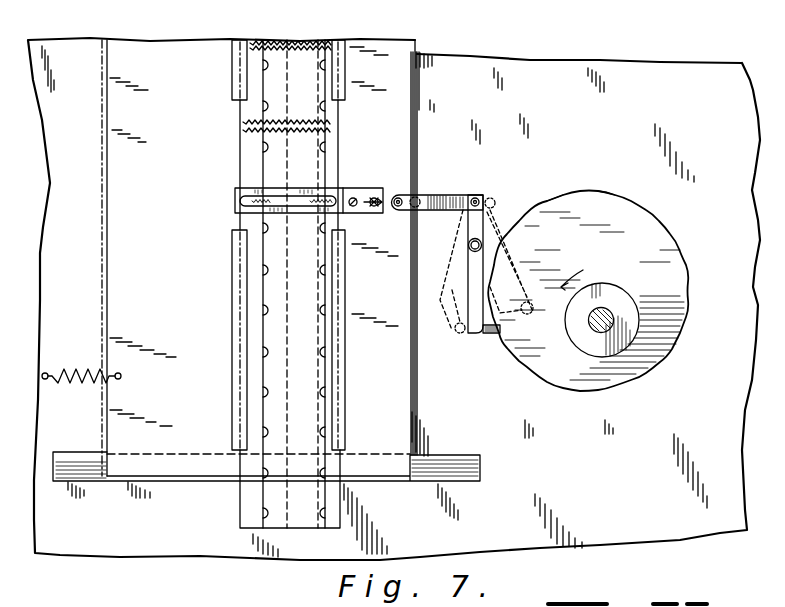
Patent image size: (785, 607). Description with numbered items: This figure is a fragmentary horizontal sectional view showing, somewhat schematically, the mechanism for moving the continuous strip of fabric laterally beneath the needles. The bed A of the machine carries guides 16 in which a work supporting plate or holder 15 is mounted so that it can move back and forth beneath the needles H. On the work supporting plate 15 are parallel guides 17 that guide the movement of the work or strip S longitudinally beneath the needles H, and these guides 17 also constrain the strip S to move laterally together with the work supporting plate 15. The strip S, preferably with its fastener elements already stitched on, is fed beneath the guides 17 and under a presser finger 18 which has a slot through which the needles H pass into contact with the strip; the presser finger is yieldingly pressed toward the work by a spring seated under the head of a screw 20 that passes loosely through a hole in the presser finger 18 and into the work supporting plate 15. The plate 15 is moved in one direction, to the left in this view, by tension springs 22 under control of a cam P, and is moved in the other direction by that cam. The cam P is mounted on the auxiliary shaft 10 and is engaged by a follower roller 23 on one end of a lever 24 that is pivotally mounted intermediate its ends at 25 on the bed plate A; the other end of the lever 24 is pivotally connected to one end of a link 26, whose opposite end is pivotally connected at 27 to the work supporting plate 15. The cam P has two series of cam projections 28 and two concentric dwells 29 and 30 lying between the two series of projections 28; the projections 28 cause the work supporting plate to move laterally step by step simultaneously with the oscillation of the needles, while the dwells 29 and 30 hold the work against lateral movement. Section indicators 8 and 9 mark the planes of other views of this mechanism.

The section line 8- 8 is at (66, 583).
The section line 9- 9 is at (385, 182).
The auxiliary shaft 10 is at (604, 310).
The work supporting plate 15 is at (168, 463).
The guides 16 is at (215, 485).
The parallel guides 17 is at (422, 404).
The presser finger 18 is at (333, 188).
The screw 20 is at (353, 207).
The tension springs 22 is at (77, 367).
The follower roller 23 is at (497, 337).
The lever 24 is at (484, 285).
The pivot 25 is at (481, 243).
The link 26 is at (439, 179).
The pivotal connection 27 is at (400, 198).
The cam projections 28 is at (593, 295).
The concentric dwell 29 is at (602, 392).
The concentric dwell 30 is at (558, 192).
The needles H is at (310, 213).
The strip S is at (297, 520).
The cam P is at (605, 202).
The bed A is at (394, 299).